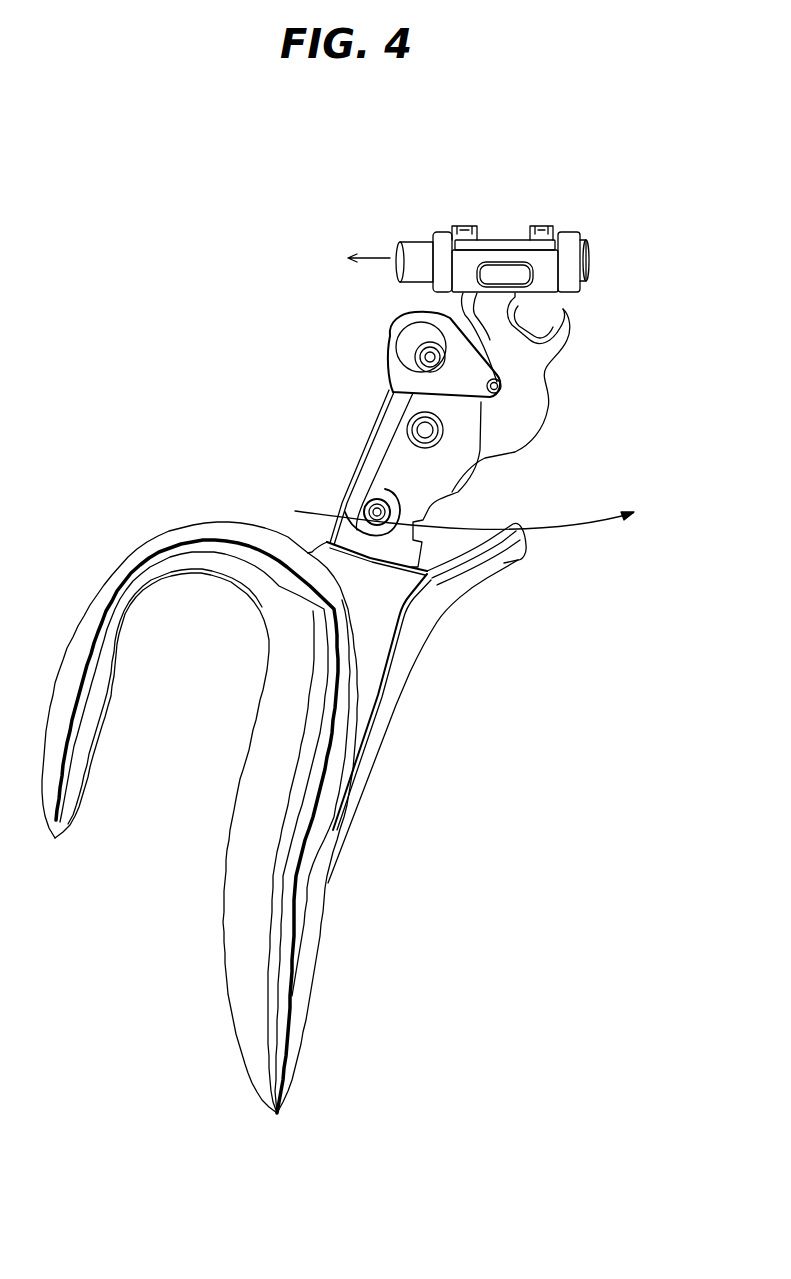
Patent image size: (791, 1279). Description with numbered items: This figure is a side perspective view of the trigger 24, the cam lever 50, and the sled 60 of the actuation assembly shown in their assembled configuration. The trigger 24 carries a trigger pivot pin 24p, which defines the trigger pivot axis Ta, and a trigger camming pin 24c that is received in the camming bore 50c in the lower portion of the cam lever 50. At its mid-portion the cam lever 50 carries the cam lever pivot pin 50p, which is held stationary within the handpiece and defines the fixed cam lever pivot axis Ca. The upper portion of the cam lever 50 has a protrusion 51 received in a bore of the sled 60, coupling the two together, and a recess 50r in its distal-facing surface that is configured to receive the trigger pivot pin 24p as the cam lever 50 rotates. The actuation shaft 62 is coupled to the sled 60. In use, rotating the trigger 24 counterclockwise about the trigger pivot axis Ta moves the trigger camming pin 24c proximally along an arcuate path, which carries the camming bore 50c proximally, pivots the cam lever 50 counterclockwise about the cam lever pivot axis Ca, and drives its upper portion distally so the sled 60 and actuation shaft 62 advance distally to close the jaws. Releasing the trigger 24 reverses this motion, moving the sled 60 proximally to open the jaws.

The trigger 24 is at (315, 977).
The trigger pivot pin 24p is at (412, 340).
The trigger camming pin 24c is at (374, 520).
The cam lever 50 is at (495, 437).
The cam lever pivot pin 50p is at (416, 425).
The recess 50r is at (500, 373).
The camming bore 50c is at (390, 497).
The protrusion 51 is at (505, 270).
The sled 60 is at (545, 268).
The actuation shaft 62 is at (410, 242).
The trigger pivot axis Ta is at (423, 360).
The cam lever pivot axis Ca is at (417, 438).